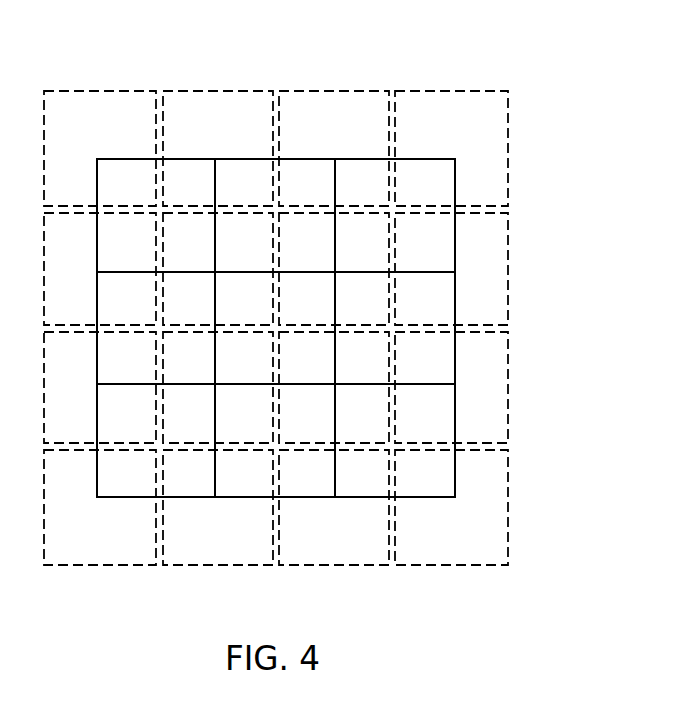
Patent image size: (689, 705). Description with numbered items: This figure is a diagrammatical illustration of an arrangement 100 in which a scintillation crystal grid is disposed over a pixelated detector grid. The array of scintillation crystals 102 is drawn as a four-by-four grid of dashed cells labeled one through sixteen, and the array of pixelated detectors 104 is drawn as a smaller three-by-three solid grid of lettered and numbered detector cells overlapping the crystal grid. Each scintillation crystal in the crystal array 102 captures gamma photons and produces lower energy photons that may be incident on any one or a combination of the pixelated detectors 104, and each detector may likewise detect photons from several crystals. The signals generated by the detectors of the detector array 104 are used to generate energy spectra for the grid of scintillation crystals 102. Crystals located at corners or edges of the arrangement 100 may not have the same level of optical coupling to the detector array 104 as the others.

The arrangement 100 is at (337, 283).
The array of scintillation crystals 102 is at (519, 127).
The array of pixelated detectors 104 is at (458, 187).